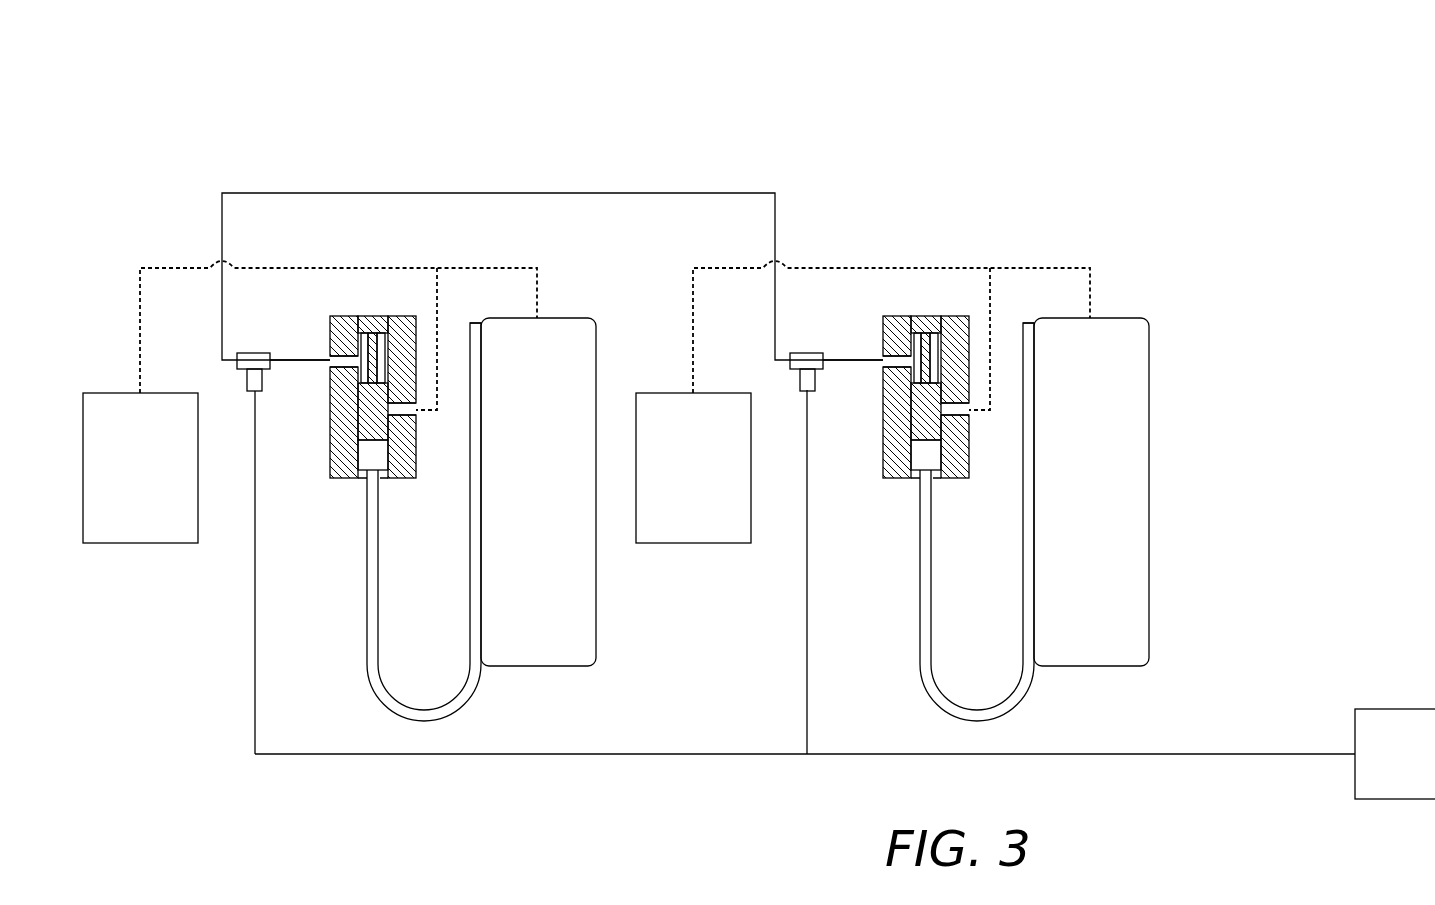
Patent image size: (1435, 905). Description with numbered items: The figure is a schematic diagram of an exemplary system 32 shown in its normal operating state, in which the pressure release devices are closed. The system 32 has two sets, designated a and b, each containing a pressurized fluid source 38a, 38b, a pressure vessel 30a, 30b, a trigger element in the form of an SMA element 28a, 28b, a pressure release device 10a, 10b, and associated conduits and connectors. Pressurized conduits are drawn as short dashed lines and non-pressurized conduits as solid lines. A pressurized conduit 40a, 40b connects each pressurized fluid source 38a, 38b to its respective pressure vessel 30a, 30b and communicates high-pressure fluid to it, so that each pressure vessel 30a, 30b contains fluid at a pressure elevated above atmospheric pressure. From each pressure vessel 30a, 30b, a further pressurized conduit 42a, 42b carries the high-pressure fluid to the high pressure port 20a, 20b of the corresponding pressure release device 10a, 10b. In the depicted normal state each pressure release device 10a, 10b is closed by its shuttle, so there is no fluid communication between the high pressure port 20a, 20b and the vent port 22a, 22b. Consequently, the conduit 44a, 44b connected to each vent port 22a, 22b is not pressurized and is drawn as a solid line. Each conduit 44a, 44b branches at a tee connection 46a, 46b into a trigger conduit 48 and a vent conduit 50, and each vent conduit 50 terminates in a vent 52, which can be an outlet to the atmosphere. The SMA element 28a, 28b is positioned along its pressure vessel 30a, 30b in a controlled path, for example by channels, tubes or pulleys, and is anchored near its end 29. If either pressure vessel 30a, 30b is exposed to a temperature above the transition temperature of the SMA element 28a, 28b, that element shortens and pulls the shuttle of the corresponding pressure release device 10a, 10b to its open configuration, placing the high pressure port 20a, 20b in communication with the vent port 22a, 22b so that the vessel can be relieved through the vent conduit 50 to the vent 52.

The system 32 is at (704, 118).
The trigger conduit 48 is at (467, 193).
The vent 52 is at (845, 754).
The pressurized conduit 40a is at (312, 268).
The pressurized conduit 40b is at (865, 268).
The pressurized conduit 42a is at (436, 283).
The pressurized conduit 42b is at (989, 283).
The pressure release device 10a is at (391, 310).
The pressure release device 10b is at (944, 310).
The vent port 22a is at (342, 360).
The vent port 22b is at (895, 360).
The high pressure port 20a is at (410, 412).
The high pressure port 20b is at (963, 412).
The SMA element 28a is at (380, 638).
The SMA element 28b is at (935, 638).
The end 29 is at (475, 322).
The pressure vessel 30a is at (538, 492).
The pressure vessel 30b is at (1091, 492).
The pressurized fluid source 38a is at (140, 468).
The pressurized fluid source 38b is at (693, 468).
The conduit 44a is at (290, 362).
The conduit 44b is at (843, 362).
The tee connection 46a is at (247, 381).
The tee connection 46b is at (800, 381).
The vent conduit 50 is at (258, 510).